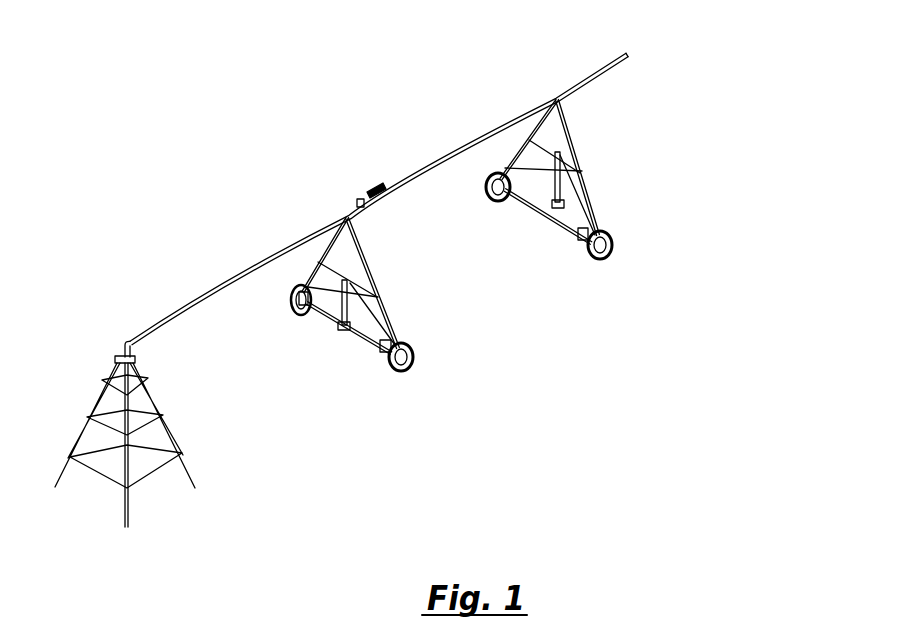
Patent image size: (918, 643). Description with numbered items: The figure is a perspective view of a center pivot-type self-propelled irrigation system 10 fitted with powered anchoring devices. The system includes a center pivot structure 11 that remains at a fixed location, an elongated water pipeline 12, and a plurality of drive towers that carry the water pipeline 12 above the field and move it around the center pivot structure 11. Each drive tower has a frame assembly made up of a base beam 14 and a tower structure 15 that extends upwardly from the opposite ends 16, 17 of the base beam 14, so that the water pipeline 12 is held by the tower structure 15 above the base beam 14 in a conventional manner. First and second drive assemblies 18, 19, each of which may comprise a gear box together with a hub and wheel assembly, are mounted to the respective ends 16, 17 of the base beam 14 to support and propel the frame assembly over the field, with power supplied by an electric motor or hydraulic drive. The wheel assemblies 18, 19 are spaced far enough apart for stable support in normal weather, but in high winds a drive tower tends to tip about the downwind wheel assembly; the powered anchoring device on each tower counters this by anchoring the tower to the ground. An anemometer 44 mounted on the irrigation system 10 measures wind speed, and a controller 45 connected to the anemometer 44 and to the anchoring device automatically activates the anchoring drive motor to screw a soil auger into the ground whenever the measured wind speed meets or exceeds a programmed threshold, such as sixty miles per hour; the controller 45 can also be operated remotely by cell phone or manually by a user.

The self-propelled irrigation system 10 is at (705, 92).
The center pivot structure 11 is at (113, 358).
The water pipeline 12 is at (208, 283).
The base beam 14 is at (363, 337).
The tower structure 15 is at (367, 250).
The first end of base beam 16 is at (300, 312).
The second end of base beam 17 is at (393, 360).
The first drive assembly 18 is at (287, 297).
The second drive assembly 19 is at (413, 372).
The anemometer 44 is at (357, 202).
The controller 45 is at (378, 188).